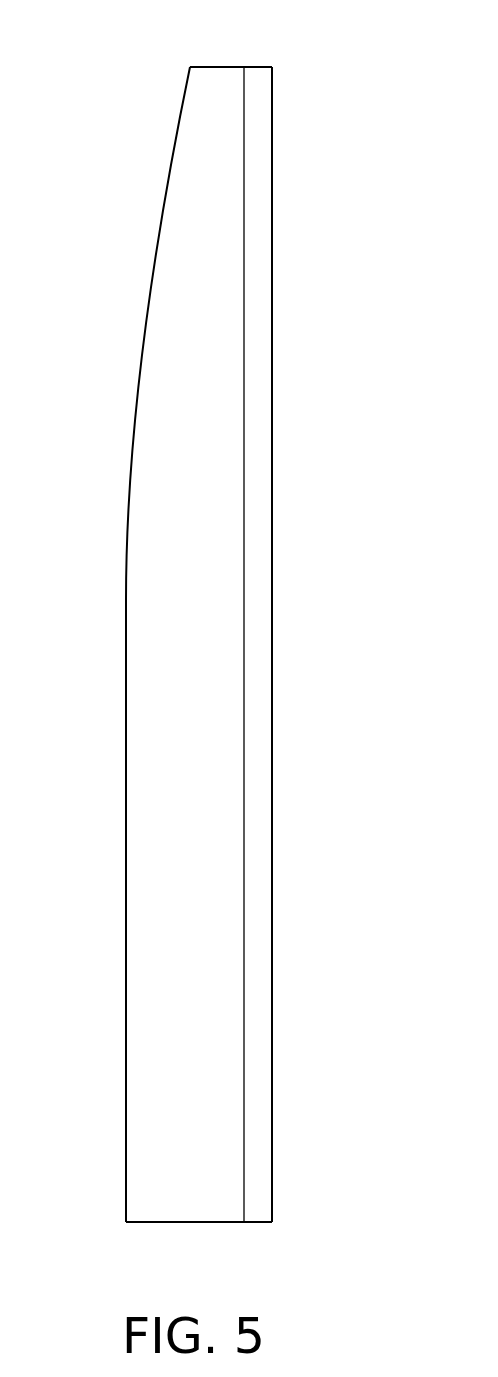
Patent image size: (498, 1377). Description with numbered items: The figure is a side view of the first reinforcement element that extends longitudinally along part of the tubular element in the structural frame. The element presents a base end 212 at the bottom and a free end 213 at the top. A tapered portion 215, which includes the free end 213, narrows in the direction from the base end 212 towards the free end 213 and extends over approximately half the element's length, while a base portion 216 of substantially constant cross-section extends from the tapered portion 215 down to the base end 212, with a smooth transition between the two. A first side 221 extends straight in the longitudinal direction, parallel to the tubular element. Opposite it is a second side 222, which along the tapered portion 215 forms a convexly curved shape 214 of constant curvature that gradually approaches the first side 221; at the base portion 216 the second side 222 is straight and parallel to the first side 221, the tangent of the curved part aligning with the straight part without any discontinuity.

The base end 212 is at (200, 1222).
The free end 213 is at (220, 67).
The convexly curved shape 214 is at (160, 198).
The tapered portion 215 is at (271, 343).
The base portion 216 is at (271, 1003).
The first side 221 is at (272, 734).
The second side 222 is at (126, 734).